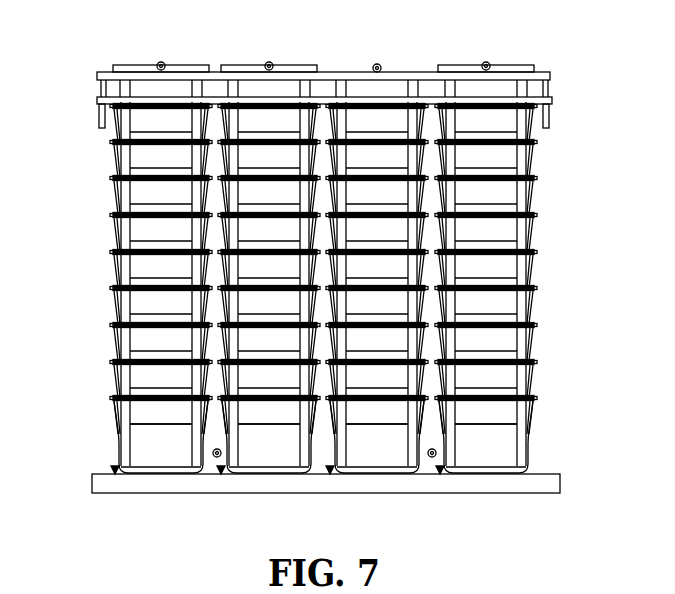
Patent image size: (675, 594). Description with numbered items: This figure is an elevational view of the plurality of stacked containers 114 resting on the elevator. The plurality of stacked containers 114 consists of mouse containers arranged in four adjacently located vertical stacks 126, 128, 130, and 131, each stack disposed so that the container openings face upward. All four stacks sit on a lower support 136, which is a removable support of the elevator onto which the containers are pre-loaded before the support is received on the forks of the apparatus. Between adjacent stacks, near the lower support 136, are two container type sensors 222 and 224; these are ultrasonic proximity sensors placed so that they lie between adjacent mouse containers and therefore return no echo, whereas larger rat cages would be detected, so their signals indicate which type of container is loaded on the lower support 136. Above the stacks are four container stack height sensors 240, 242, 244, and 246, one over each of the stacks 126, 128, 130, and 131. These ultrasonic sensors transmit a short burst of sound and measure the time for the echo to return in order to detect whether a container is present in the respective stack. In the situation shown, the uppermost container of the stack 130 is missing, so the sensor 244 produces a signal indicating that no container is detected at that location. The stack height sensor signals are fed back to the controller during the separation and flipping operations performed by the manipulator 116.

The plurality of stacked containers 114 is at (94, 276).
The manipulator 116 is at (97, 70).
The first vertical stack 126 is at (113, 476).
The second vertical stack 128 is at (219, 478).
The third vertical stack 130 is at (328, 478).
The fourth vertical stack 131 is at (438, 478).
The lower support 136 is at (562, 482).
The container type sensor 222 is at (213, 456).
The container type sensor 224 is at (428, 456).
The container stack height sensor 240 is at (161, 61).
The container stack height sensor 242 is at (269, 61).
The container stack height sensor 244 is at (377, 63).
The container stack height sensor 246 is at (486, 61).